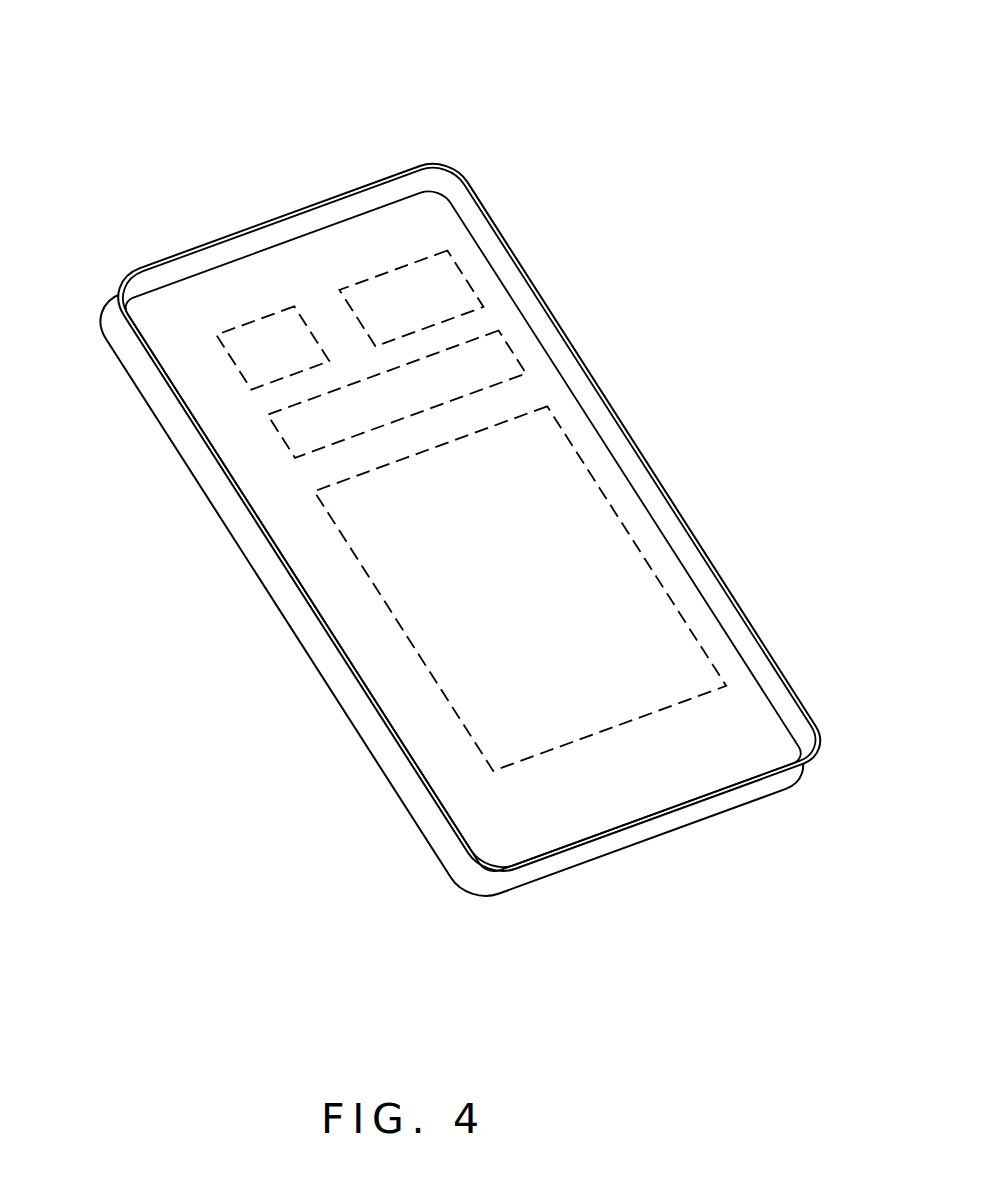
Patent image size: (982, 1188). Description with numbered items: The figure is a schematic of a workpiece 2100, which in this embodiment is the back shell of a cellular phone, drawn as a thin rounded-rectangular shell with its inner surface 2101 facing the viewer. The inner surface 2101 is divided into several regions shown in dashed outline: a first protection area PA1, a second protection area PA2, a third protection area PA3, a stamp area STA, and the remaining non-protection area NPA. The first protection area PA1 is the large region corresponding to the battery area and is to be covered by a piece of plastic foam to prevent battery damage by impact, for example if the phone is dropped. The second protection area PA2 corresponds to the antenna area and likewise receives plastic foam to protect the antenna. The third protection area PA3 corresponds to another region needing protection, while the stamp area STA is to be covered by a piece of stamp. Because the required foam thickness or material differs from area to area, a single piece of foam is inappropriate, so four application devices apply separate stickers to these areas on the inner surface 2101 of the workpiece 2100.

The workpiece 2100 is at (441, 466).
The inner surface 2101 is at (493, 236).
The non-protection area NPA is at (596, 460).
The first protection area PA1 is at (612, 564).
The second protection area PA2 is at (255, 356).
The third protection area PA3 is at (450, 290).
The stamp area STA is at (303, 430).